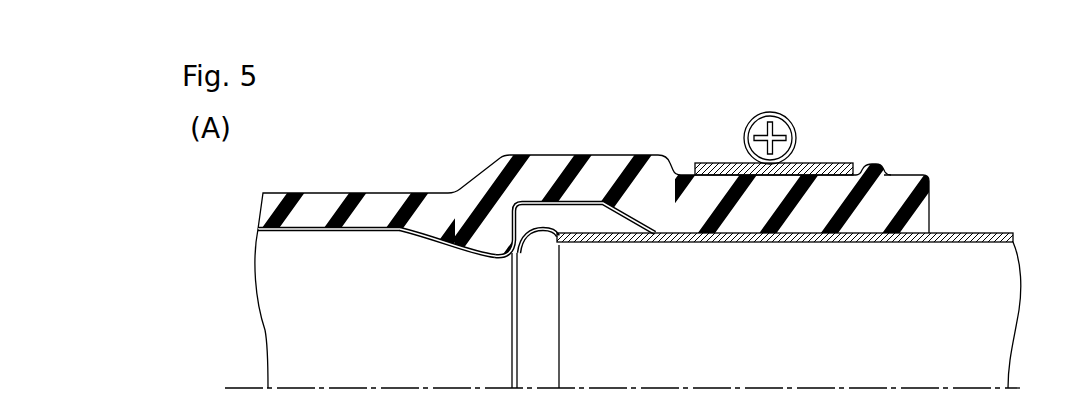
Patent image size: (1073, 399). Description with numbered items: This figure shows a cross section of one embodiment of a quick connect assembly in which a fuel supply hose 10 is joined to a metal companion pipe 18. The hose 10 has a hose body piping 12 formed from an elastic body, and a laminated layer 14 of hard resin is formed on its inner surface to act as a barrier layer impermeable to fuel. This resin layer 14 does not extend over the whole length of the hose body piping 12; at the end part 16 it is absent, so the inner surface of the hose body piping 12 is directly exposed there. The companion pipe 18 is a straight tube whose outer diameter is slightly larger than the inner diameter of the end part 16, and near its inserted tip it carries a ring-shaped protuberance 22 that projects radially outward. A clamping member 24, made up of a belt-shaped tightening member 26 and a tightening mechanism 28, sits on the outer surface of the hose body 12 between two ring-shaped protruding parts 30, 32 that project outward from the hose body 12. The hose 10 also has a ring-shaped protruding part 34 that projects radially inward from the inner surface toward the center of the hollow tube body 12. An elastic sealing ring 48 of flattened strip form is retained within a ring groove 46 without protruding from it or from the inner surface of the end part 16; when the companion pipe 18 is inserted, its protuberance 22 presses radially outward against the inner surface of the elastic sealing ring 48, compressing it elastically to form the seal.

The fuel supply hose 10 is at (462, 129).
The hose body piping 12 is at (375, 191).
The laminated layer 14 is at (313, 231).
The end part 16 is at (830, 190).
The companion pipe 18 is at (968, 231).
The protuberance 22 is at (519, 203).
The clamping member 24 is at (801, 113).
The belt-shaped tightening member 26 is at (801, 163).
The tightening mechanism 28 is at (752, 118).
The ring-shaped protruding part 30 is at (872, 165).
The ring-shaped protruding part 32 is at (610, 160).
The ring-shaped protruding part 34 is at (475, 251).
The ring groove 46 is at (580, 201).
The elastic sealing ring 48 is at (609, 246).